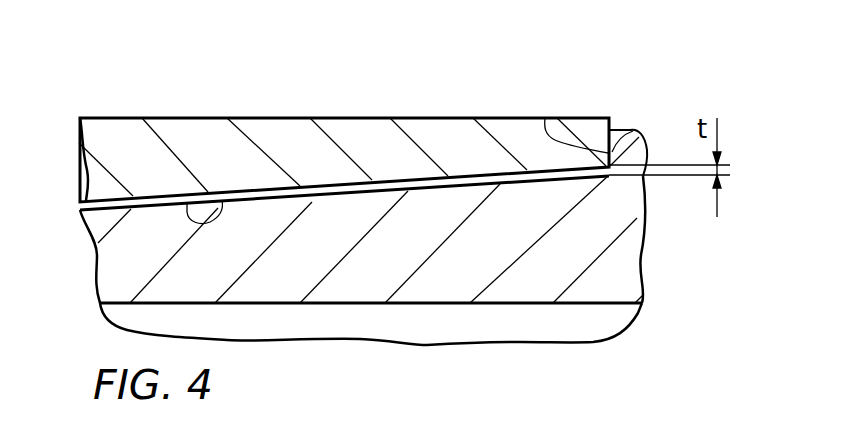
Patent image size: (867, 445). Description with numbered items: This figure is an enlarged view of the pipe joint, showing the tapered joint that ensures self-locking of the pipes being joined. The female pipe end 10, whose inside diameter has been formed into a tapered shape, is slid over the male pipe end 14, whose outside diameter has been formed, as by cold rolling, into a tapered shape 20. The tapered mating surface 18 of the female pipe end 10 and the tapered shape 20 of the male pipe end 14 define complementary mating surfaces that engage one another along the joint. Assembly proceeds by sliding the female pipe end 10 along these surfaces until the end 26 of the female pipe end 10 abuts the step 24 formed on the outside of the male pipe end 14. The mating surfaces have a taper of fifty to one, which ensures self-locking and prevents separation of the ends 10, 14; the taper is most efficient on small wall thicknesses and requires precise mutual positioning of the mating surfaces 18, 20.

The female pipe end 10 is at (273, 133).
The male pipe end 14 is at (315, 218).
The tapered mating surface 18 is at (187, 204).
The tapered shape 20 is at (409, 188).
The step 24 is at (545, 118).
The end of the female pipe end 26 is at (637, 128).